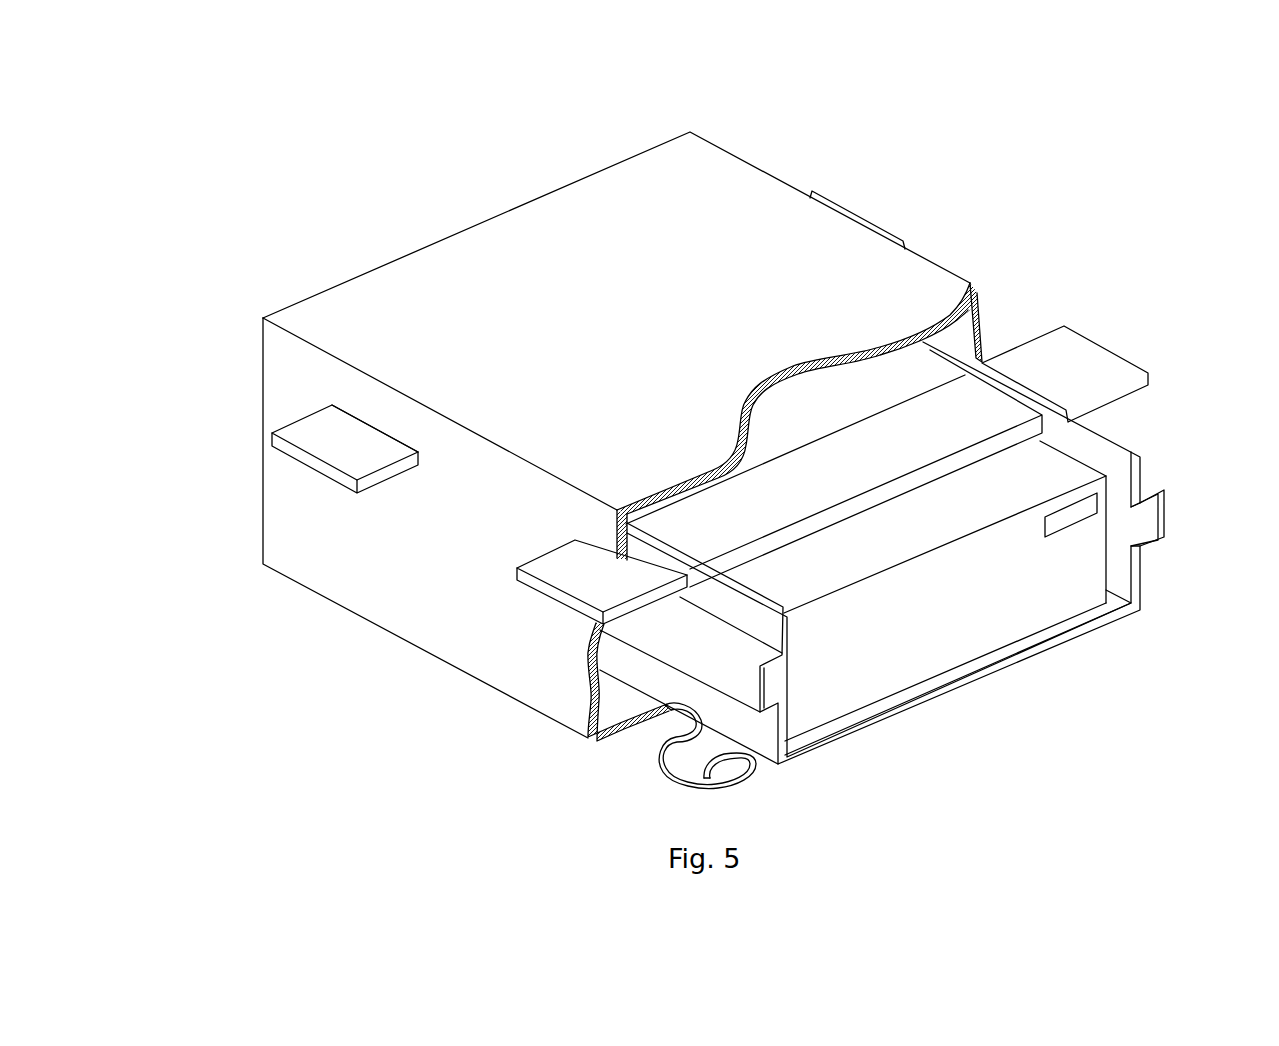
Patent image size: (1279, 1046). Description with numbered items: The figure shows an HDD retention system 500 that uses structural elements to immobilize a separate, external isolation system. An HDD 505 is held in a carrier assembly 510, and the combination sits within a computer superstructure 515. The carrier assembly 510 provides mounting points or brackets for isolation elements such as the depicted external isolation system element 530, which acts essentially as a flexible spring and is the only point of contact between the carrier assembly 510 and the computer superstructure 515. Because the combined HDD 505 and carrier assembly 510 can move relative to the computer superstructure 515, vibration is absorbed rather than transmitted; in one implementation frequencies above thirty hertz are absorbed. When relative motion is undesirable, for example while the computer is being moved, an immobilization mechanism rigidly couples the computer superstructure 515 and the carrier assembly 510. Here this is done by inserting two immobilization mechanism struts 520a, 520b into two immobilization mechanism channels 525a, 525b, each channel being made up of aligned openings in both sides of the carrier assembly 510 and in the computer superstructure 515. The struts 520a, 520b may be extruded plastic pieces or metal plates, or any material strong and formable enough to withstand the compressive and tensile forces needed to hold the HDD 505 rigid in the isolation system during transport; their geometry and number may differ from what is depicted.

The HDD retention system 500 is at (1118, 130).
The HDD 505 is at (1052, 625).
The carrier assembly 510 is at (1128, 608).
The computer superstructure 515 is at (950, 286).
The immobilization mechanism strut 520a is at (313, 465).
The immobilization mechanism strut 520b is at (557, 607).
The immobilization mechanism channel 525a is at (345, 408).
The immobilization mechanism channel 525b is at (585, 545).
The external isolation system element 530 is at (668, 772).